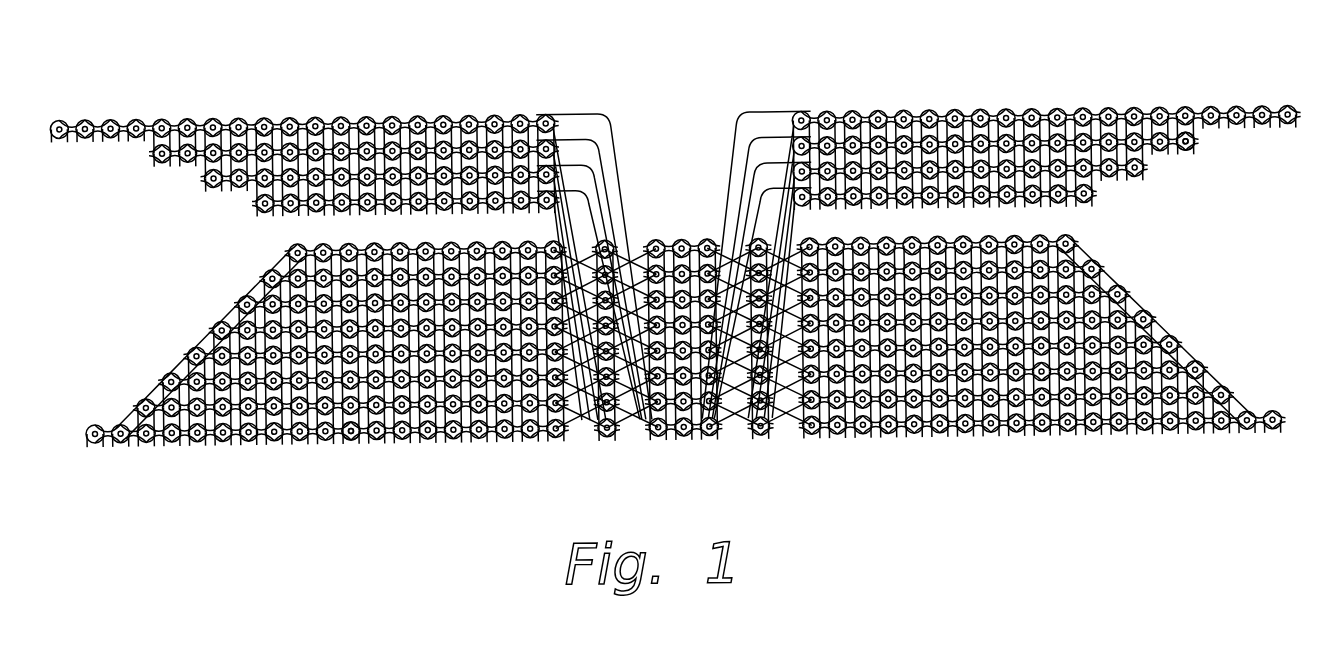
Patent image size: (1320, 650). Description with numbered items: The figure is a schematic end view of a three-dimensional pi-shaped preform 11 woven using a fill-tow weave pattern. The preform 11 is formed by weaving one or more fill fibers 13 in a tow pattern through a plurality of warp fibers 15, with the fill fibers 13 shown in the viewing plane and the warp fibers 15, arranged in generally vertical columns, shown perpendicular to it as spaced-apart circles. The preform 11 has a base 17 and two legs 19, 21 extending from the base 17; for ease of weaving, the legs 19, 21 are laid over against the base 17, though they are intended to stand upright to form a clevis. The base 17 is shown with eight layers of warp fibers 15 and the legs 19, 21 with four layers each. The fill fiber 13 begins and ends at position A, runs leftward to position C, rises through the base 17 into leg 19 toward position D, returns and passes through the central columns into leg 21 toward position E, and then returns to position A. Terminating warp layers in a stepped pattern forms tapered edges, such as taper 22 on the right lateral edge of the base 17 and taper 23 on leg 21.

The preform 11 is at (614, 57).
The fill fiber 13 is at (219, 328).
The warp fiber 15 is at (166, 380).
The base 17 is at (350, 444).
The leg 19 is at (344, 121).
The leg 21 is at (961, 120).
The taper 22 is at (1157, 329).
The taper 23 is at (1198, 165).